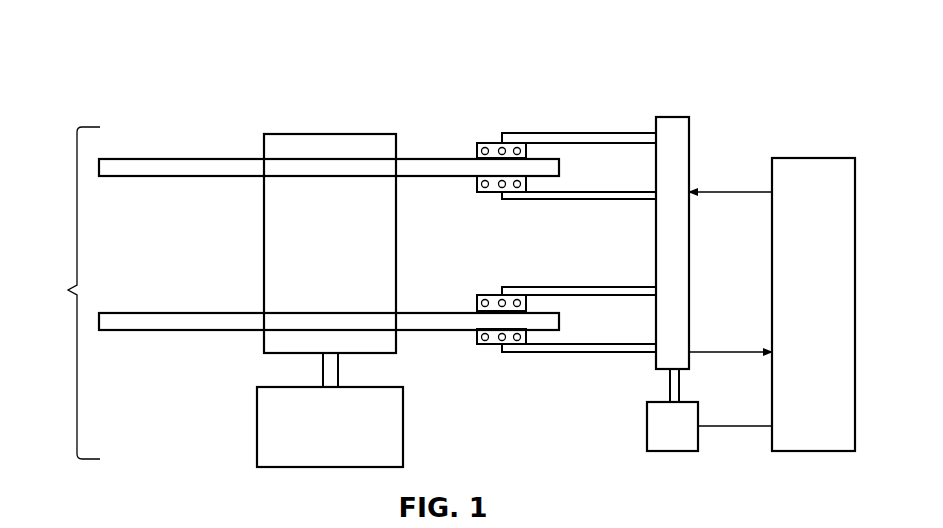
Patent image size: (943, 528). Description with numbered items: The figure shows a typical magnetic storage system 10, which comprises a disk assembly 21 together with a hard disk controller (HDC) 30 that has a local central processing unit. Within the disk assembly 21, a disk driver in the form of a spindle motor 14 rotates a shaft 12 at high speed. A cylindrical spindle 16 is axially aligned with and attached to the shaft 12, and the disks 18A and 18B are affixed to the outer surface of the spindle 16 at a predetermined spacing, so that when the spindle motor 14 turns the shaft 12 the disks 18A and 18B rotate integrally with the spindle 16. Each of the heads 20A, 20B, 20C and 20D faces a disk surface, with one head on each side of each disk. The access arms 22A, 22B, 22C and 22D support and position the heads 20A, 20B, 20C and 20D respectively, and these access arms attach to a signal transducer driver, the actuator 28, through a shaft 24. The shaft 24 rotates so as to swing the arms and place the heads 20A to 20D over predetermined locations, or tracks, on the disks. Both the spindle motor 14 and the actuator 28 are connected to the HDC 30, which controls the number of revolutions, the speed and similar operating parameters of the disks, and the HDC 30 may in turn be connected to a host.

The magnetic storage system 10 is at (186, 68).
The shaft 12 is at (323, 365).
The spindle motor 14 is at (346, 434).
The spindle 16 is at (313, 134).
The disk 18A is at (182, 159).
The disk 18B is at (182, 313).
The head 20A is at (477, 150).
The head 20B is at (477, 185).
The head 20C is at (477, 303).
The head 20D is at (477, 337).
The disk assembly 21 is at (62, 293).
The access arm 22A is at (540, 133).
The access arm 22B is at (540, 199).
The access arm 22C is at (540, 287).
The access arm 22D is at (540, 352).
The shaft 24 is at (689, 128).
The actuator 28 is at (647, 424).
The hard disk controller 30 is at (803, 335).